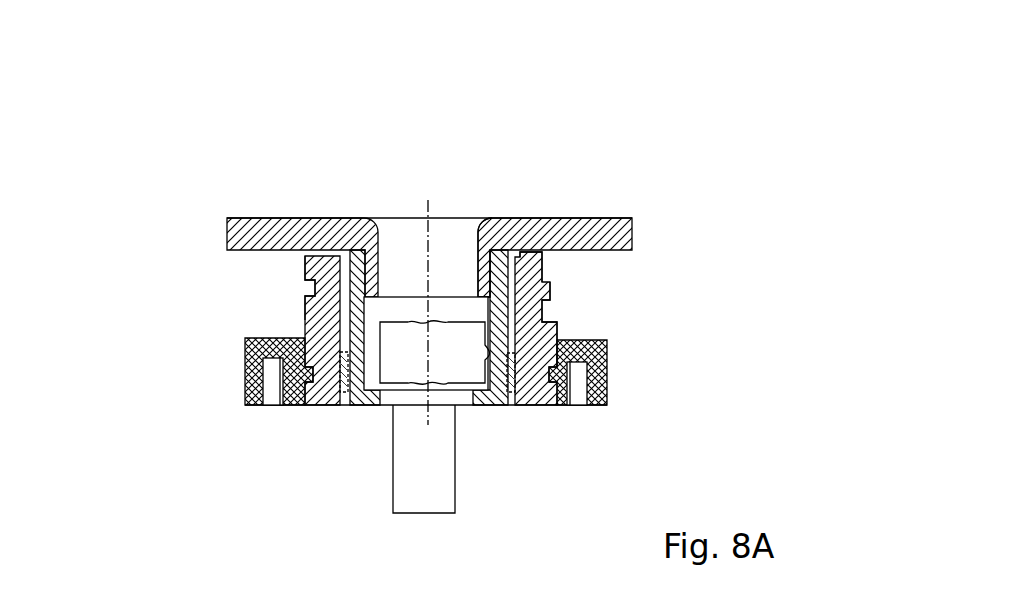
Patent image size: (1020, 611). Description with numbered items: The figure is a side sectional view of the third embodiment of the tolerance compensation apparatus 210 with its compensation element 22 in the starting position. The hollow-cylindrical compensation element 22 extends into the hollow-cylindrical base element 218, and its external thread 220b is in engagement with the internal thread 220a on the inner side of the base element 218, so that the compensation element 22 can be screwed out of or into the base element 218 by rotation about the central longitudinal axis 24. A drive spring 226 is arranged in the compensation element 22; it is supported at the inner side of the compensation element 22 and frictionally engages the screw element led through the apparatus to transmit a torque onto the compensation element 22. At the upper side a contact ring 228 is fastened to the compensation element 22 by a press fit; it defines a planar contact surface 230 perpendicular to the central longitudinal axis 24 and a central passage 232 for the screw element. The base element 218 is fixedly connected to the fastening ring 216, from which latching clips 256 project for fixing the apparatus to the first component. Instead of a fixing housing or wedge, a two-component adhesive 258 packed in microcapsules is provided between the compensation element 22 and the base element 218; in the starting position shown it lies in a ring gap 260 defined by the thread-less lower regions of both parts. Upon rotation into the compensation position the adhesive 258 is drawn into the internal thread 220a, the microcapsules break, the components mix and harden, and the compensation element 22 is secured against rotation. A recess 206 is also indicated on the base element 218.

The tolerance compensation apparatus 210 is at (504, 114).
The compensation element 22 is at (542, 218).
The central longitudinal axis 24 is at (430, 206).
The recess 206 is at (520, 282).
The fastening ring 216 is at (608, 367).
The base element 218 is at (537, 322).
The internal thread 220a is at (305, 258).
The external thread 220b is at (305, 277).
The drive spring 226 is at (395, 308).
The contact ring 228 is at (632, 219).
The contact surface 230 is at (518, 218).
The central passage 232 is at (377, 218).
The latching clip 256 is at (427, 498).
The two-component adhesive 258 is at (343, 390).
The ring gap 260 is at (305, 327).